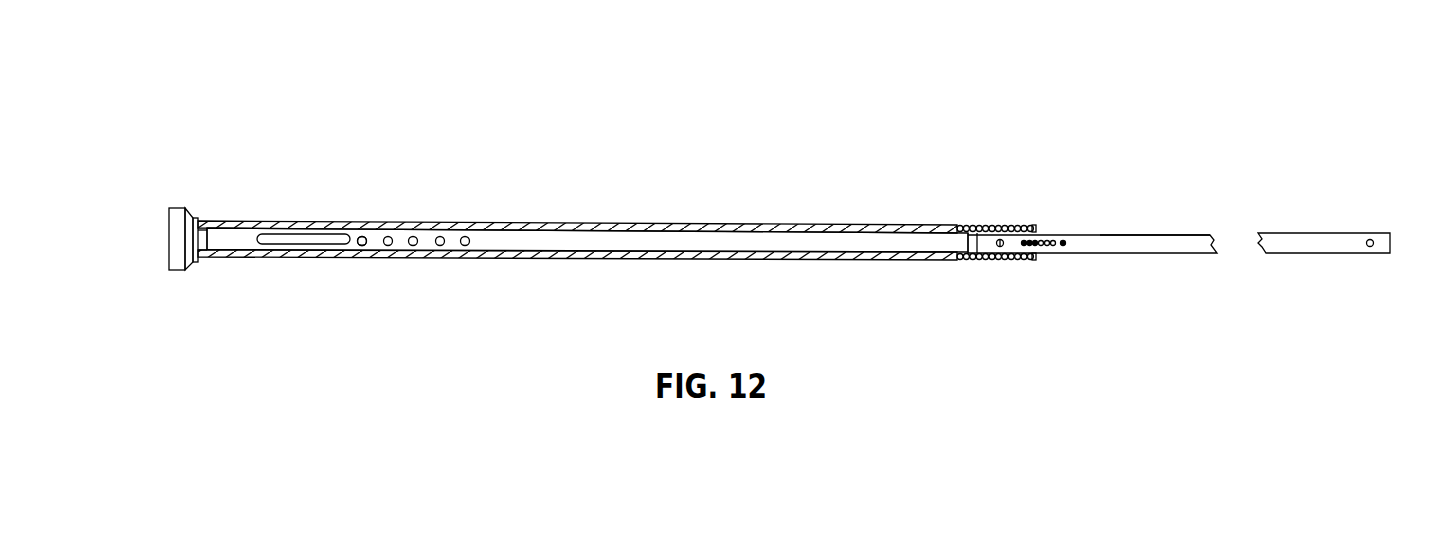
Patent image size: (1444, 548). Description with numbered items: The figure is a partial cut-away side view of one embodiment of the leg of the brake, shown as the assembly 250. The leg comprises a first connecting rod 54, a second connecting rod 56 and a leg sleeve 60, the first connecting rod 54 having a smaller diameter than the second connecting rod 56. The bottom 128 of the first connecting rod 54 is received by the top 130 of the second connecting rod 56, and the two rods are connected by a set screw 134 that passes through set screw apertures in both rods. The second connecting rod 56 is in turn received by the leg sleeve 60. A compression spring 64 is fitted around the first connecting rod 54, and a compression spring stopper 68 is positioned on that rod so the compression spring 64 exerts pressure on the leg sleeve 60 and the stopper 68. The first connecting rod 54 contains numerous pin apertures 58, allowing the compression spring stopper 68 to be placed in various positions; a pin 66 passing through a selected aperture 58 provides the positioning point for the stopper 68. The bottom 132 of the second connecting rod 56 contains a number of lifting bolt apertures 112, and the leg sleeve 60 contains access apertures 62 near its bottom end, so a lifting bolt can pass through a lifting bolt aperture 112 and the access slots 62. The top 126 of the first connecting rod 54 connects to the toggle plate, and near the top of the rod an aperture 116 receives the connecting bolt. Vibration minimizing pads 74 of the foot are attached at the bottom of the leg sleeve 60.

The instrument assembly 250 is at (812, 115).
The vibration minimizing pads 74 is at (146, 206).
The leg sleeve 60 is at (577, 197).
The second connecting rod 56 is at (587, 193).
The access apertures 62 is at (279, 186).
The lifting bolt apertures 112 is at (412, 199).
The bottom of the second connecting rod 132 is at (428, 286).
The compression spring 64 is at (902, 277).
The pin apertures 58 is at (1092, 191).
The first connecting rod 54 is at (1173, 179).
The top of the second connecting rod 130 is at (1014, 159).
The bottom of the first connecting rod 128 is at (1005, 299).
The set screw 134 is at (943, 175).
The pin 66 is at (1087, 288).
The compression spring stopper 68 is at (1088, 157).
The top of the first connecting rod 126 is at (1324, 271).
The aperture 116 is at (1393, 206).